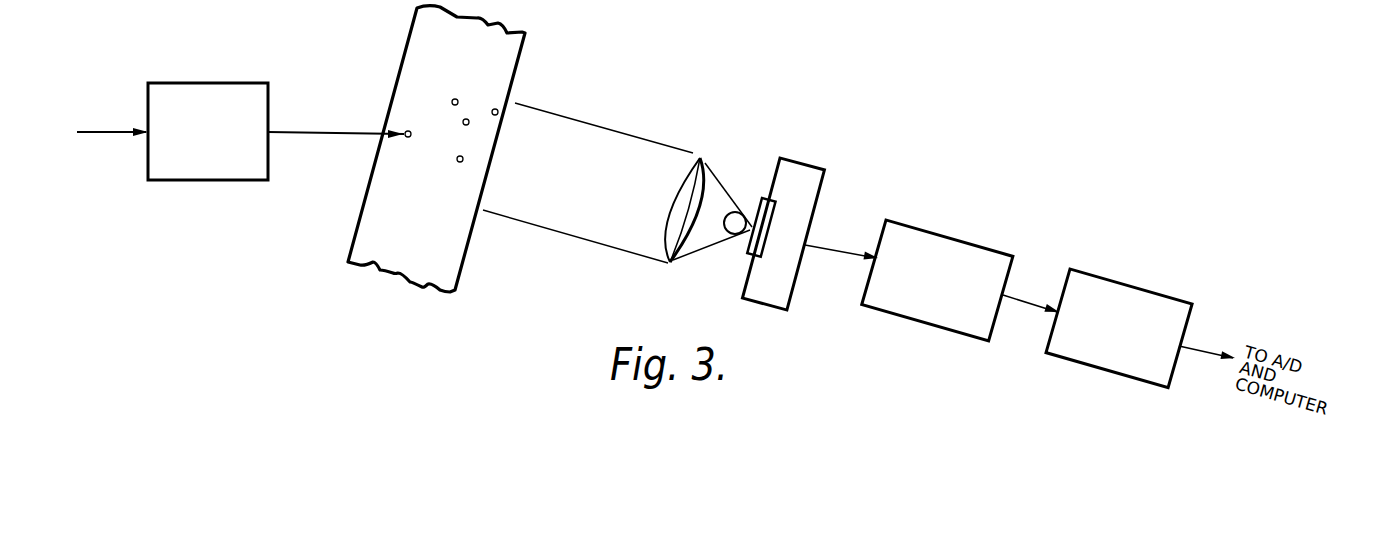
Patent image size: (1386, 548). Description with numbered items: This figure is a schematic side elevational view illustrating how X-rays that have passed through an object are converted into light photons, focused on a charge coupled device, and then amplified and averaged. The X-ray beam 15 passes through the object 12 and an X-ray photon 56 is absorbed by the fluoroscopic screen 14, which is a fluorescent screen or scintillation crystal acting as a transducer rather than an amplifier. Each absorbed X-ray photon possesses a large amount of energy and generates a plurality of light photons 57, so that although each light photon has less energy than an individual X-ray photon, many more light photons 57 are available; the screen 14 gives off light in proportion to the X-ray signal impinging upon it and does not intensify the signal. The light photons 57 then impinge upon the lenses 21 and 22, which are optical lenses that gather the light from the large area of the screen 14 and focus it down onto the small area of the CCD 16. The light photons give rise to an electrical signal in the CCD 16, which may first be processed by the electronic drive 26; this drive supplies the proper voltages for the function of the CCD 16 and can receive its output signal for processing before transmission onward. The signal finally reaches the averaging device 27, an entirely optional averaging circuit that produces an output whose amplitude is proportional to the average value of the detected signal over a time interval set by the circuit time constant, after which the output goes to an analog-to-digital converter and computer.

The object 12 is at (217, 83).
The fluoroscopic screen 14 is at (415, 42).
The X-ray beam 15 is at (112, 128).
The CCD 16 is at (807, 165).
The lens 21 is at (699, 157).
The lens 22 is at (738, 214).
The electronic drive 26 is at (968, 237).
The averaging device 27 is at (1147, 287).
The X-ray photon 56 is at (410, 137).
The light photons 57 is at (494, 115).